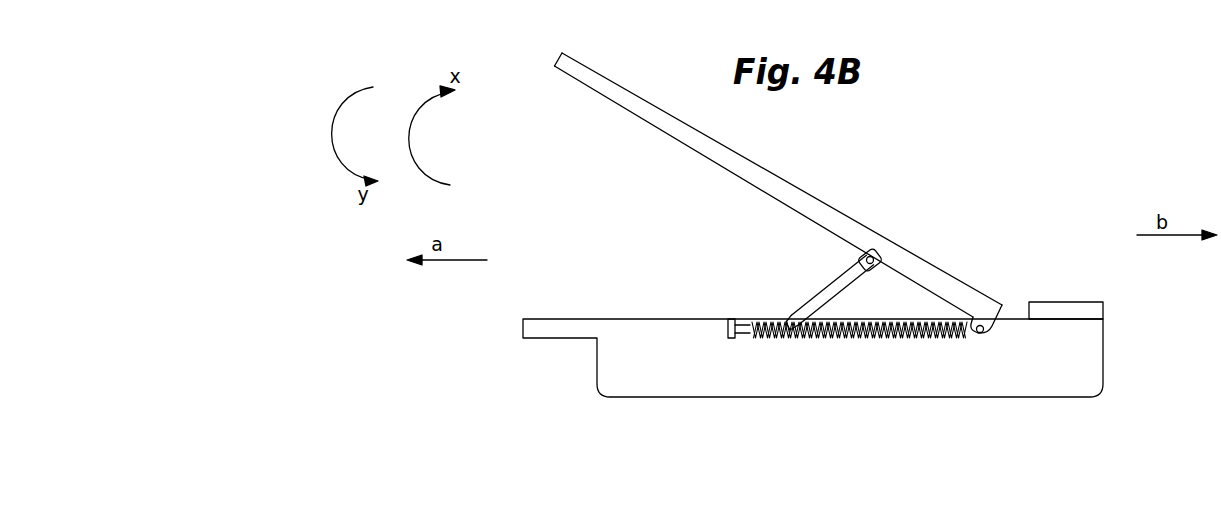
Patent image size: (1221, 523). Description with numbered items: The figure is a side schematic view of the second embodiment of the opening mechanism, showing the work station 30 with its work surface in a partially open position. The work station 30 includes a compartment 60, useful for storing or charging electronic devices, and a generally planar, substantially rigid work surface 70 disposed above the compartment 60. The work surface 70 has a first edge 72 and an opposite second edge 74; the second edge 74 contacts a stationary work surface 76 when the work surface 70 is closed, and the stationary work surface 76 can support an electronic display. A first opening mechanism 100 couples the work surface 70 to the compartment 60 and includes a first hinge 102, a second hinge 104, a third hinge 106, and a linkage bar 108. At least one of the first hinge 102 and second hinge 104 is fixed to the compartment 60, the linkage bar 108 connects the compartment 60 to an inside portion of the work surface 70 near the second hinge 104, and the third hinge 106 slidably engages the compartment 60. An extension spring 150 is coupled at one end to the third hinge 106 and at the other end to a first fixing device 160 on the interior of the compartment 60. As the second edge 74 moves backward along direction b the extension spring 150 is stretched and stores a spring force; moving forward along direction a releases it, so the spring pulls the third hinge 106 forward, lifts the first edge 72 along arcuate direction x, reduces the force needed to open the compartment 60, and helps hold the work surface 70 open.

The work station 30 is at (882, 185).
The compartment 60 is at (1106, 344).
The work surface 70 is at (785, 184).
The first edge 72 is at (560, 55).
The second edge 74 is at (1005, 312).
The stationary work surface 76 is at (1053, 302).
The first opening mechanism 100 is at (786, 284).
The first hinge 102 is at (789, 322).
The second hinge 104 is at (874, 256).
The third hinge 106 is at (992, 336).
The linkage bar 108 is at (843, 268).
The extension spring 150 is at (870, 336).
The first fixing device 160 is at (727, 334).